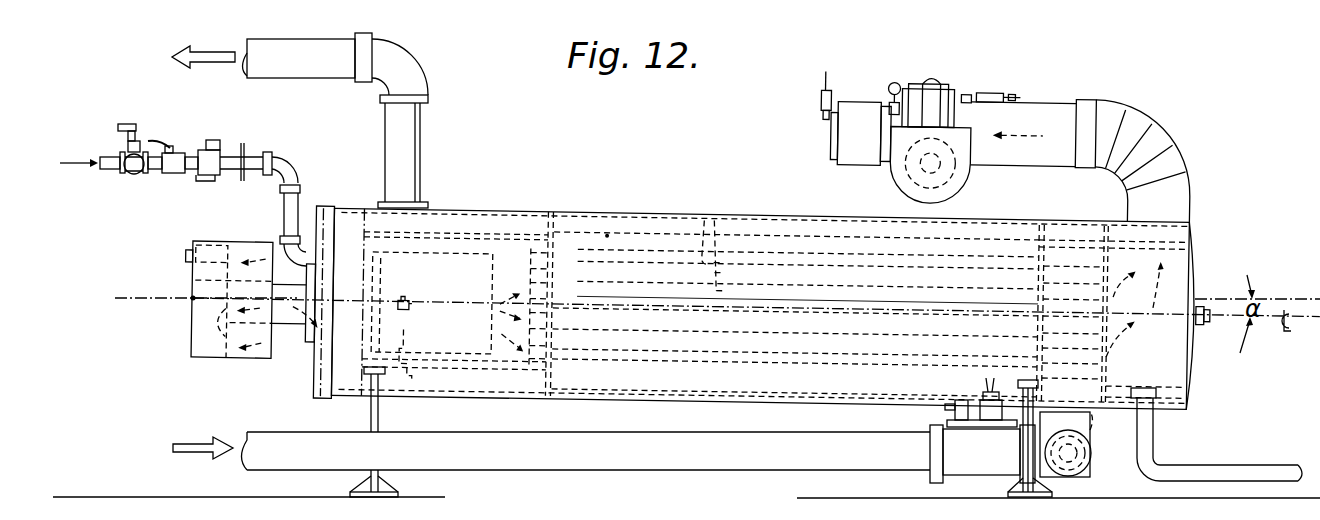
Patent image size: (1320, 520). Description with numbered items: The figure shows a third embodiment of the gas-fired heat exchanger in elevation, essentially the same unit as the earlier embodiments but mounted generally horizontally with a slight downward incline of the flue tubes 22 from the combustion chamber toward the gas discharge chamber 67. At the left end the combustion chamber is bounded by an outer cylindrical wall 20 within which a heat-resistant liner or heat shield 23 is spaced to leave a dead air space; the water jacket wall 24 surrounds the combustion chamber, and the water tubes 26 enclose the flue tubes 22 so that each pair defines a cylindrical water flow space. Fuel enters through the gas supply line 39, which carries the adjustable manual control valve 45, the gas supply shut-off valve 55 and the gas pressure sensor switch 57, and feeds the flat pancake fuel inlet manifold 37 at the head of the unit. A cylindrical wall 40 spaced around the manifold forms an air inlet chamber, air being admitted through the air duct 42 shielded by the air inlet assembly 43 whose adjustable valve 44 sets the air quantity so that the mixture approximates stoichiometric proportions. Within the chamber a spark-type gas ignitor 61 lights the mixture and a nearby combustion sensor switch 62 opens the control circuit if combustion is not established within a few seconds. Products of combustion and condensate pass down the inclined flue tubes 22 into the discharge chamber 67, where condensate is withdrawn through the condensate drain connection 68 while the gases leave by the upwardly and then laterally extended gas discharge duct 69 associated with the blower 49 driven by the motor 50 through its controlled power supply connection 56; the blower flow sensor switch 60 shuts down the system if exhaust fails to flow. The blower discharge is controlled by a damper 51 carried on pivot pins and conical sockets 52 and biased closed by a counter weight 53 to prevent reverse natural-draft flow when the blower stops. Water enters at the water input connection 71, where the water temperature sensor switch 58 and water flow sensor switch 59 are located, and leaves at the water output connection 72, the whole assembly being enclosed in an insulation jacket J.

The cylindrical wall 20 is at (509, 243).
The flue tubes 22 is at (547, 210).
The liner or heat shield 23 is at (446, 253).
The water jacket wall 24 is at (494, 230).
The water tubes 26 is at (705, 206).
The fuel inlet manifold 37 is at (309, 370).
The gas supply line 39 is at (279, 201).
The cylindrical wall 40 is at (349, 205).
The air duct 42 is at (293, 323).
The air inlet assembly 43 is at (247, 358).
The adjustable valve 44 is at (191, 284).
The adjustable manual control valve 45 is at (137, 117).
The blower 49 is at (940, 68).
The motor 50 is at (858, 90).
The damper 51 is at (896, 162).
The pivot pins and conical sockets 52 is at (963, 82).
The counter weight 53 is at (895, 68).
The gas supply shut-off valve 55 is at (181, 145).
The controlled power supply connection 56 is at (818, 100).
The gas pressure sensor switch 57 is at (216, 140).
The water temperature sensor switch 58 is at (964, 400).
The water flow sensor switch 59 is at (990, 378).
The blower flow sensor switch 60 is at (986, 80).
The gas ignitor 61 is at (411, 306).
The combustion sensor switch 62 is at (404, 386).
The gas discharge chamber 67 is at (1168, 340).
The condensate drain connection 68 is at (1153, 440).
The gas discharge duct 69 is at (1057, 92).
The water input connection 71 is at (1097, 405).
The water output connection 72 is at (422, 206).
The insulation jacket J is at (606, 228).